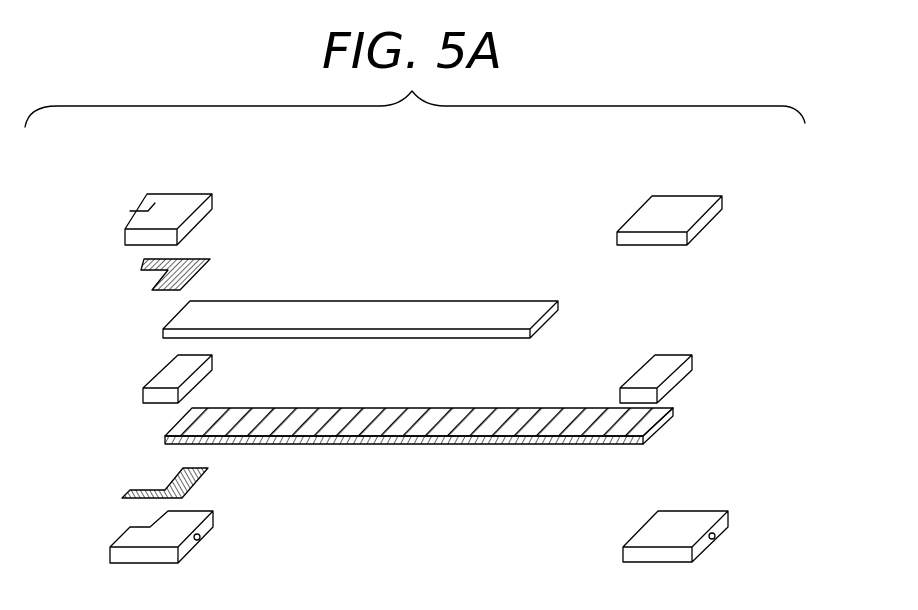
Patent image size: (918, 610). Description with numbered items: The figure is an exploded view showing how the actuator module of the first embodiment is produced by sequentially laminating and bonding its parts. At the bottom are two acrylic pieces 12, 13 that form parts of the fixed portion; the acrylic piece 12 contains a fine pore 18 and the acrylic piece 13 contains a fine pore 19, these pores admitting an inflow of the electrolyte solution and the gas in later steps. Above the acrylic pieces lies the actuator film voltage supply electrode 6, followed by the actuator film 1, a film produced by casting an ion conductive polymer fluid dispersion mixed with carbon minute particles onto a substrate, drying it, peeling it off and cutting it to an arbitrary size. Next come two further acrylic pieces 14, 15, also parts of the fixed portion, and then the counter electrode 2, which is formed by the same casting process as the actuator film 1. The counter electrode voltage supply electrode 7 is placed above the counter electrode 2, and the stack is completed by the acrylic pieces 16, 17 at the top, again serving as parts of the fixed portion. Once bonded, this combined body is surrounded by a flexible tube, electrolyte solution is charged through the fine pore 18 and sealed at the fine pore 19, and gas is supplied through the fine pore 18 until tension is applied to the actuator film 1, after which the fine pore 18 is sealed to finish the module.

The actuator film 1 is at (427, 445).
The counter electrode 2 is at (400, 300).
The actuator film voltage supply electrode 6 is at (135, 493).
The counter electrode voltage supply electrode 7 is at (162, 275).
The acrylic piece 12 is at (133, 535).
The acrylic piece 13 is at (694, 515).
The acrylic piece 14 is at (162, 378).
The acrylic piece 15 is at (673, 381).
The acrylic piece 16 is at (153, 202).
The acrylic piece 17 is at (685, 216).
The fine pore 18 is at (200, 537).
The fine pore 19 is at (717, 536).